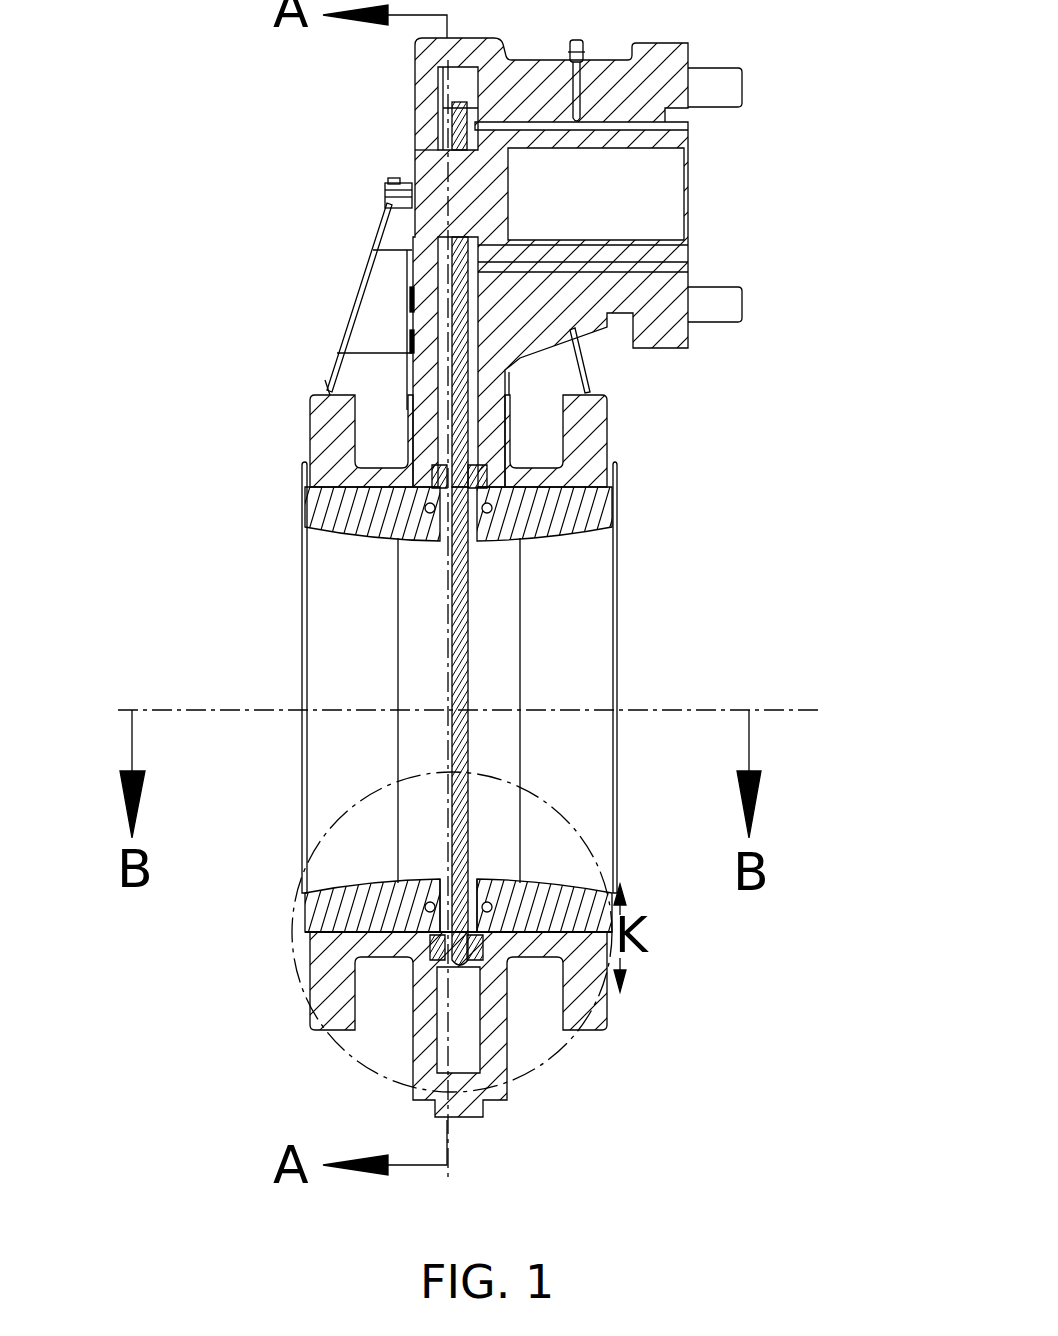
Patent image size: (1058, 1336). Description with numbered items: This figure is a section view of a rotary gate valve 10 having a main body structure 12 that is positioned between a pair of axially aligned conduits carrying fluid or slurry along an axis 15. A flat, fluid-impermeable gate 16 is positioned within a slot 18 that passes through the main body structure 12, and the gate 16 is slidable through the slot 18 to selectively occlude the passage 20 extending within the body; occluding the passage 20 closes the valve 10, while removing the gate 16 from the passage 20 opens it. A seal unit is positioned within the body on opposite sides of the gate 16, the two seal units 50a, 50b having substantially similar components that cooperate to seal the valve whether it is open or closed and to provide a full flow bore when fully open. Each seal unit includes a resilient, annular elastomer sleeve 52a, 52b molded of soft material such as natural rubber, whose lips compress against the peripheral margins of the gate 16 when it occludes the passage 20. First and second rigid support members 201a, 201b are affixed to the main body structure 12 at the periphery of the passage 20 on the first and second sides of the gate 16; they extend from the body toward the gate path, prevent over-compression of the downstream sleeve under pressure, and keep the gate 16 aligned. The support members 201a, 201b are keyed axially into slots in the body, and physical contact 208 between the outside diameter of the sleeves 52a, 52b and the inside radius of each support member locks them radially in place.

The rotary gate valve 10 is at (155, 1093).
The main body structure 12 is at (569, 1024).
The axis 15 is at (486, 665).
The gate 16 is at (668, 726).
The slot 18 is at (641, 294).
The passage 20 is at (359, 647).
The seal unit 50a is at (213, 671).
The seal unit 50b is at (735, 642).
The elastomer sleeve 52a is at (261, 930).
The elastomer sleeve 52b is at (696, 915).
The first rigid support member 201a is at (329, 1036).
The second rigid support member 201b is at (596, 1045).
The physical contact 208 is at (385, 851).